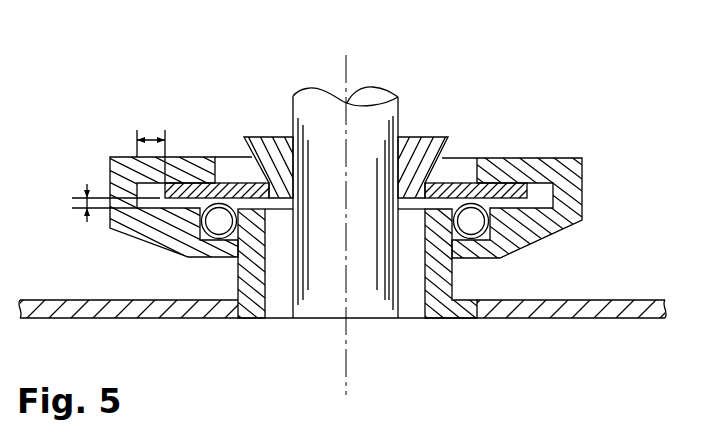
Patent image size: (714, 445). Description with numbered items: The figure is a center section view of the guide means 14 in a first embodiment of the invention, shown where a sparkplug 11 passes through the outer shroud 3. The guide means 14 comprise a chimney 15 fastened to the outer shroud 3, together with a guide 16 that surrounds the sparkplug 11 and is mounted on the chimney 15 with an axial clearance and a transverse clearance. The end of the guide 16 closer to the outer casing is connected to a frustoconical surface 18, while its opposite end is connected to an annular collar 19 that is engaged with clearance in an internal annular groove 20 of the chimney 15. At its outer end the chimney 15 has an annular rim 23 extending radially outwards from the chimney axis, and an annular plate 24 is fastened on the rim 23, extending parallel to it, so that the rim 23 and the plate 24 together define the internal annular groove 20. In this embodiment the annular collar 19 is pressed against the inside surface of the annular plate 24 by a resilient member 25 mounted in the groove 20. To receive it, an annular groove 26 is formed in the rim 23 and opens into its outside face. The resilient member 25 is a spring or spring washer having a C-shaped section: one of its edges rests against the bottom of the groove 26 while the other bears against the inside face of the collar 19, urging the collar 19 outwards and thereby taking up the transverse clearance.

The outer shroud 3 is at (607, 318).
The sparkplug 11 is at (318, 303).
The guide means 14 is at (586, 100).
The chimney 15 is at (443, 260).
The guide 16 is at (255, 154).
The frustoconical surface 18 is at (290, 150).
The annular collar 19 is at (448, 185).
The internal annular groove 20 is at (556, 197).
The annular rim 23 is at (504, 240).
The annular plate 24 is at (532, 160).
The resilient member 25 is at (474, 206).
The annular groove 26 is at (215, 204).